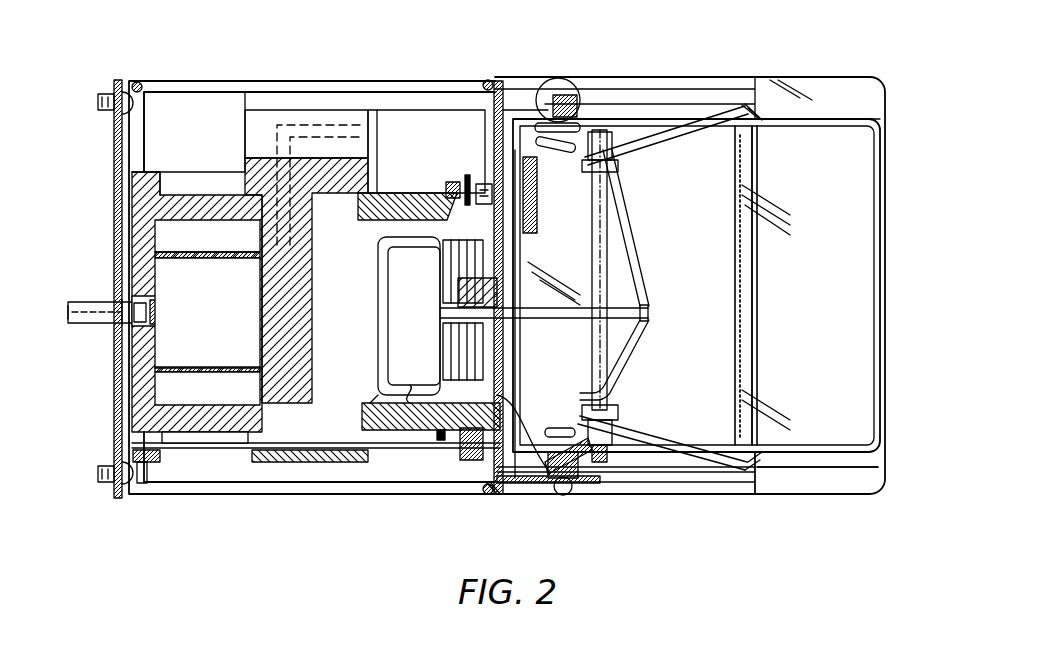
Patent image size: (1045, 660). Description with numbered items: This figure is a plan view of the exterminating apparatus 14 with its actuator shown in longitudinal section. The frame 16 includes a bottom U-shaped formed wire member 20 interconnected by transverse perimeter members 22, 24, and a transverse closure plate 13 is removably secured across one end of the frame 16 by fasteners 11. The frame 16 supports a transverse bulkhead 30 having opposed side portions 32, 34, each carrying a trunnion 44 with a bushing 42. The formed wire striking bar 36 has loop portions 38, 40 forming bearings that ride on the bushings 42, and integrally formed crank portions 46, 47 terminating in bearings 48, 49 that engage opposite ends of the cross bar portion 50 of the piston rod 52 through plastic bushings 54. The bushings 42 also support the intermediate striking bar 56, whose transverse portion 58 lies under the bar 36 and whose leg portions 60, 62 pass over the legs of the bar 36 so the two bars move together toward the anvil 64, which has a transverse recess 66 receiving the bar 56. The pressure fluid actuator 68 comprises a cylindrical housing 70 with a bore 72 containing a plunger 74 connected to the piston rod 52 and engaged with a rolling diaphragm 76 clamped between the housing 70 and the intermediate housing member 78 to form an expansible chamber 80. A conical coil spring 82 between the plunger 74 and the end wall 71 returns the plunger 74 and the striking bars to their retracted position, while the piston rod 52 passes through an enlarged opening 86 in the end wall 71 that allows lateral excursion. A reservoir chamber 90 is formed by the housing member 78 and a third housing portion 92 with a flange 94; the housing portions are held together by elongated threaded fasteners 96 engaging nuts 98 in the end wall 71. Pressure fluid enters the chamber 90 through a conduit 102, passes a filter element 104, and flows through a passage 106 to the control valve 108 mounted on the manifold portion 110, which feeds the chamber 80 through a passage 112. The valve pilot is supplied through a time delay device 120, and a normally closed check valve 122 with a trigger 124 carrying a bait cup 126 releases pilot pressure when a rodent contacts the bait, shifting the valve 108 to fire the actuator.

The fasteners 11 is at (112, 88).
The transverse closure plate 13 is at (115, 372).
The exterminating apparatus 14 is at (756, 50).
The frame 16 is at (316, 72).
The bottom U-shaped formed wire member 20 is at (225, 80).
The transverse perimeter member 22 is at (140, 82).
The transverse perimeter member 24 is at (494, 90).
The transverse bulkhead 30 is at (564, 482).
The bulkhead side portion 32 is at (576, 485).
The bulkhead side portion 34 is at (572, 88).
The striking bar 36 is at (856, 114).
The loop portion 38 is at (562, 80).
The loop portion 40 is at (518, 436).
The bushings 42 is at (592, 112).
The trunnions 44 is at (586, 102).
The crank portion 46 is at (572, 404).
The crank portion 47 is at (555, 208).
The bearing 48 is at (618, 404).
The bearing 49 is at (618, 168).
The cross bar portion 50 is at (618, 270).
The piston rod 52 is at (538, 314).
The plastic bushings 54 is at (665, 140).
The intermediate striking bar 56 is at (810, 282).
The transverse portion 58 is at (737, 198).
The leg portion 60 is at (670, 466).
The leg portion 62 is at (696, 124).
The anvil 64 is at (856, 493).
The transverse recess 66 is at (758, 336).
The pressure fluid actuator 68 is at (440, 436).
The cylindrical housing 70 is at (406, 420).
The end wall 71 is at (535, 262).
The bore 72 is at (420, 383).
The plunger 74 is at (395, 316).
The rolling diaphragm 76 is at (380, 367).
The intermediate housing member 78 is at (318, 462).
The expansible chamber 80 is at (352, 287).
The conical coil spring 82 is at (442, 248).
The enlarged opening 86 is at (486, 340).
The pressure fluid reservoir chamber 90 is at (192, 393).
The third housing portion 92 is at (200, 190).
The flange 94 is at (125, 225).
The elongated threaded fasteners 96 is at (205, 444).
The nuts 98 is at (488, 472).
The conduit 102 is at (98, 300).
The filter element 104 is at (186, 288).
The passage 106 is at (248, 247).
The control valve 108 is at (408, 108).
The manifold portion 110 is at (275, 110).
The passage 112 is at (320, 238).
The time delay device 120 is at (376, 100).
The check valve 122 is at (478, 195).
The trigger 124 is at (468, 175).
The bait cup 126 is at (520, 152).